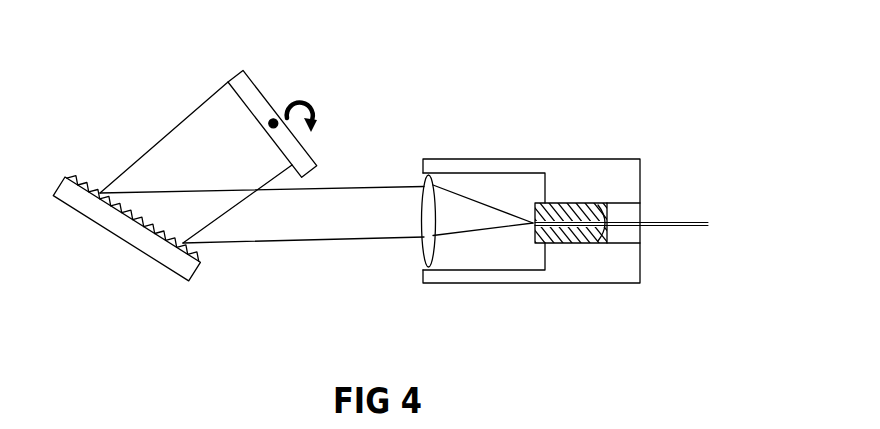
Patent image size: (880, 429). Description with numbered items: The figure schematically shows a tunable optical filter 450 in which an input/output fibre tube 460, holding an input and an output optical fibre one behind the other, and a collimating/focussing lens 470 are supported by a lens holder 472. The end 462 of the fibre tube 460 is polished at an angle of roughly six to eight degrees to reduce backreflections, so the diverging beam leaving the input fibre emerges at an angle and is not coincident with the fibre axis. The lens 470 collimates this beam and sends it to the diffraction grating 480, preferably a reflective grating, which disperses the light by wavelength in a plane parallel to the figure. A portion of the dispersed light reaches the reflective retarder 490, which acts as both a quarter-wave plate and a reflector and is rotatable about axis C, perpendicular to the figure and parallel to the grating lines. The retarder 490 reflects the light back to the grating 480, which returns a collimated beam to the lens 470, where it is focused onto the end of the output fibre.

The optical filter 450 is at (472, 64).
The reflective retarder 490 is at (232, 82).
The axis C is at (273, 113).
The diffraction grating 480 is at (189, 281).
The lens holder 472 is at (525, 159).
The collimating/focussing lens 470 is at (427, 260).
The angled end face 462 is at (535, 236).
The input/output fibre tube 460 is at (588, 243).